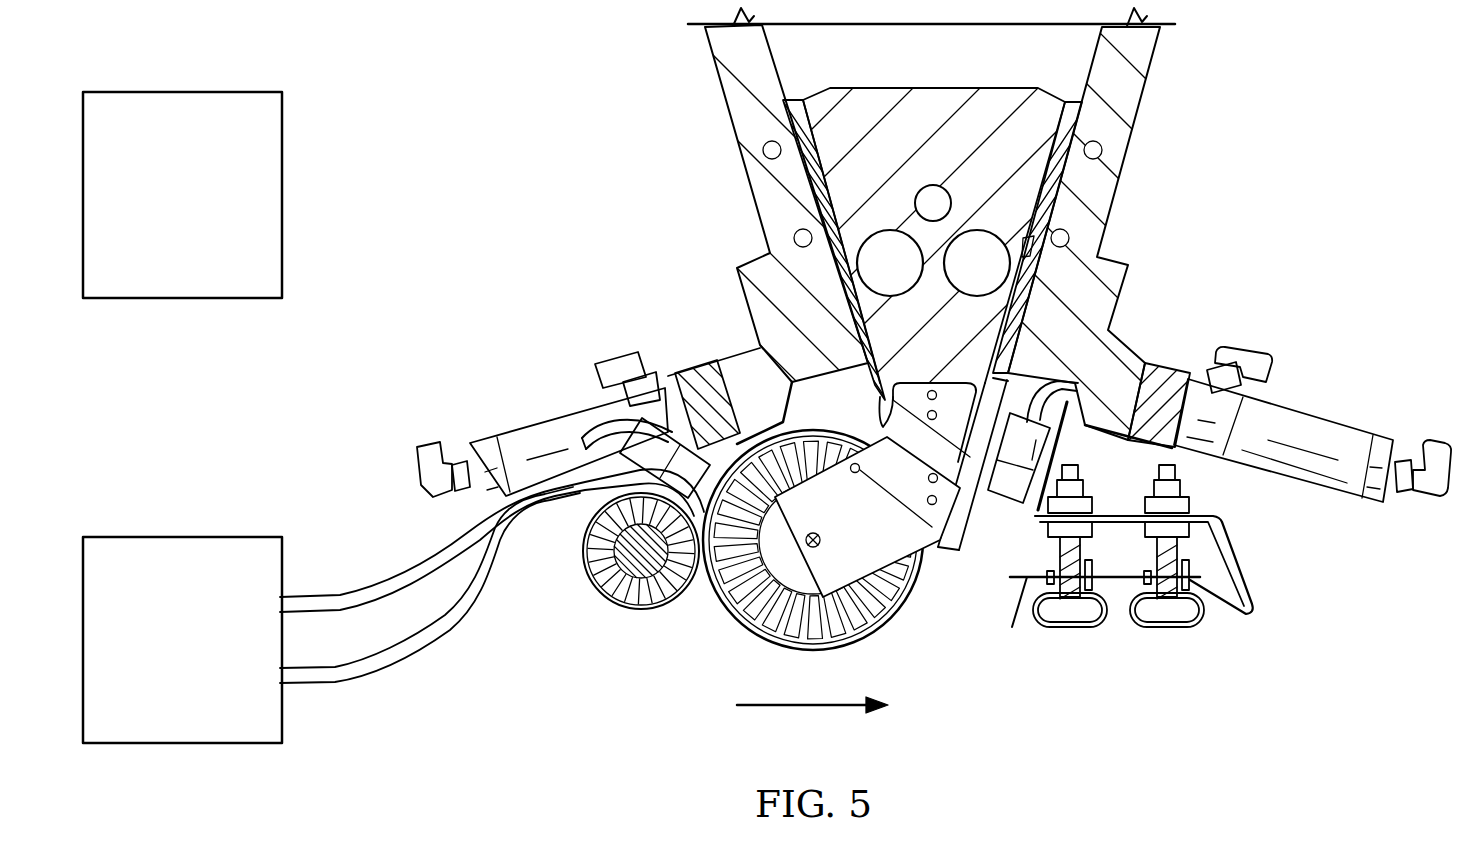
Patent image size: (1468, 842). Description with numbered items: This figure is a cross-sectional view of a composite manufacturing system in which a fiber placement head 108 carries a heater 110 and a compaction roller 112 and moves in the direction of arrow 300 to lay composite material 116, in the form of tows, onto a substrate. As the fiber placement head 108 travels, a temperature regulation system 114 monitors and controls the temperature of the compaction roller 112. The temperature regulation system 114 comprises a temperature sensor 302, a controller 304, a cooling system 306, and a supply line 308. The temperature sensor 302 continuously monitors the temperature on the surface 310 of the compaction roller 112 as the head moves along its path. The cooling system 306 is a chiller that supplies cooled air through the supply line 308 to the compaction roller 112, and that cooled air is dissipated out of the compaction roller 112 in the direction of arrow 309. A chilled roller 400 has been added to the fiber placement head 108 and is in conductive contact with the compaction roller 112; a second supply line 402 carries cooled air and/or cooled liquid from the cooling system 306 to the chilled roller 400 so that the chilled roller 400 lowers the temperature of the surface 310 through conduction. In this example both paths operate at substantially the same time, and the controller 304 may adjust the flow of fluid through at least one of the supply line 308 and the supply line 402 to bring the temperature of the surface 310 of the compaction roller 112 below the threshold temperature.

The fiber placement head 108 is at (698, 290).
The heater 110 is at (1278, 574).
The compaction roller 112 is at (886, 640).
The temperature regulation system 114 is at (575, 684).
The composite material 116 is at (794, 97).
The arrow 300 is at (800, 710).
The temperature sensor 302 is at (672, 400).
The controller 304 is at (203, 211).
The cooling system 306 is at (203, 658).
The supply line 308 is at (370, 580).
The arrow 309 is at (822, 540).
The surface 310 is at (811, 554).
The chilled roller 400 is at (578, 585).
The supply line 402 is at (397, 654).